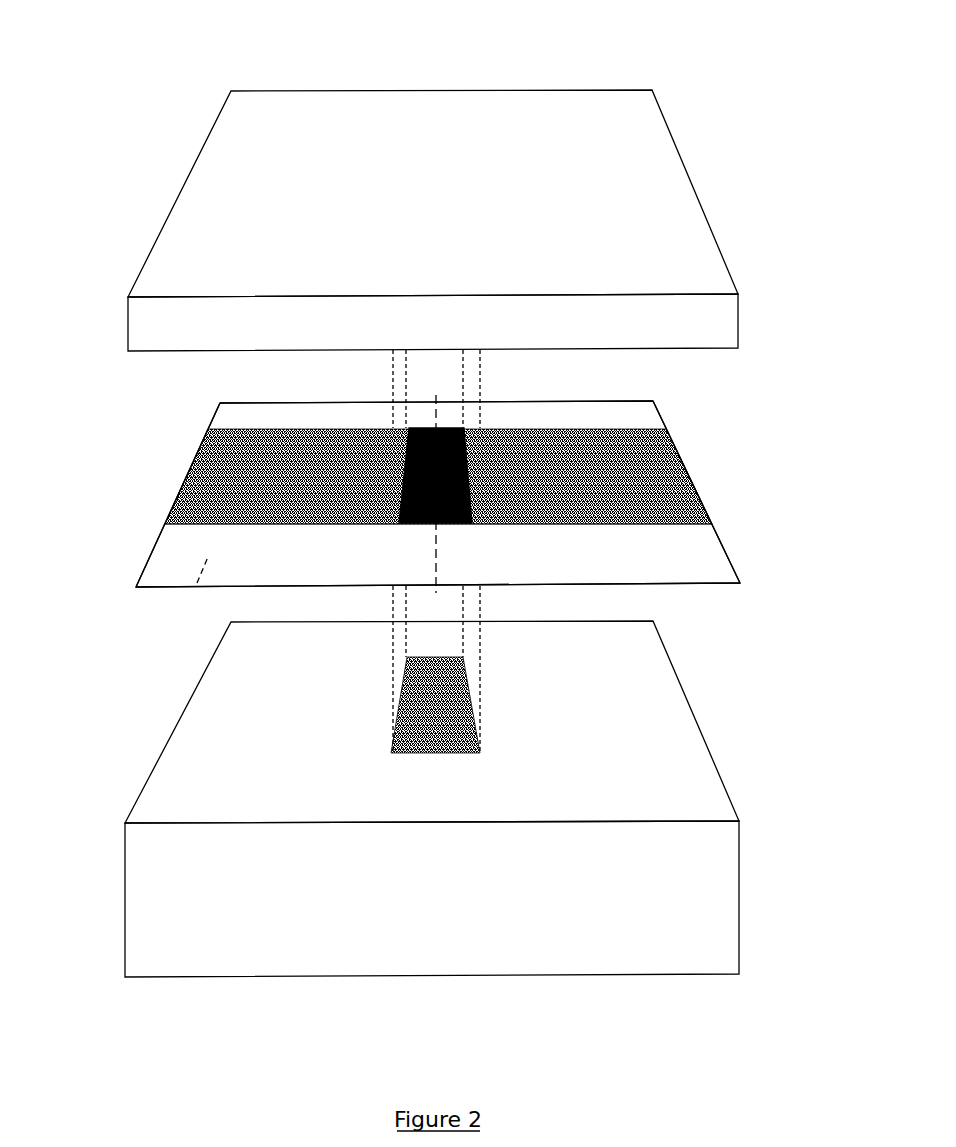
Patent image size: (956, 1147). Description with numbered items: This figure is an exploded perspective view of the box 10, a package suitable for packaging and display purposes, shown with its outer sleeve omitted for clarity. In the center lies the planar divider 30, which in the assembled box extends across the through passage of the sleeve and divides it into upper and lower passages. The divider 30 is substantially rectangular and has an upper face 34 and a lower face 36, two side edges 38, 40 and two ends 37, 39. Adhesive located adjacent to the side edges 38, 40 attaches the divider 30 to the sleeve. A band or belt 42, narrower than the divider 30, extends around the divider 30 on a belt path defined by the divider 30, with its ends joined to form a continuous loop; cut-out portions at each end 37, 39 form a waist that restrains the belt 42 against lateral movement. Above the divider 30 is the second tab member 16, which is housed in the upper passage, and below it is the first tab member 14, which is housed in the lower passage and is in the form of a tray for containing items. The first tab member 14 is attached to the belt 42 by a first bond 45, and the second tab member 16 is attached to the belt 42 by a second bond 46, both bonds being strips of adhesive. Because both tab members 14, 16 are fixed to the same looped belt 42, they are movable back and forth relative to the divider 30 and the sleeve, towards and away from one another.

The box 10 is at (128, 92).
The first tab member 14 is at (700, 723).
The second tab member 16 is at (697, 197).
The planar divider 30 is at (690, 558).
The upper face 34 is at (438, 541).
The lower face 36 is at (196, 584).
The end 37 is at (155, 542).
The side edge 38 is at (582, 401).
The end 39 is at (733, 565).
The side edge 40 is at (652, 583).
The belt 42 is at (682, 490).
The first bond 45 is at (393, 712).
The second bond 46 is at (397, 483).